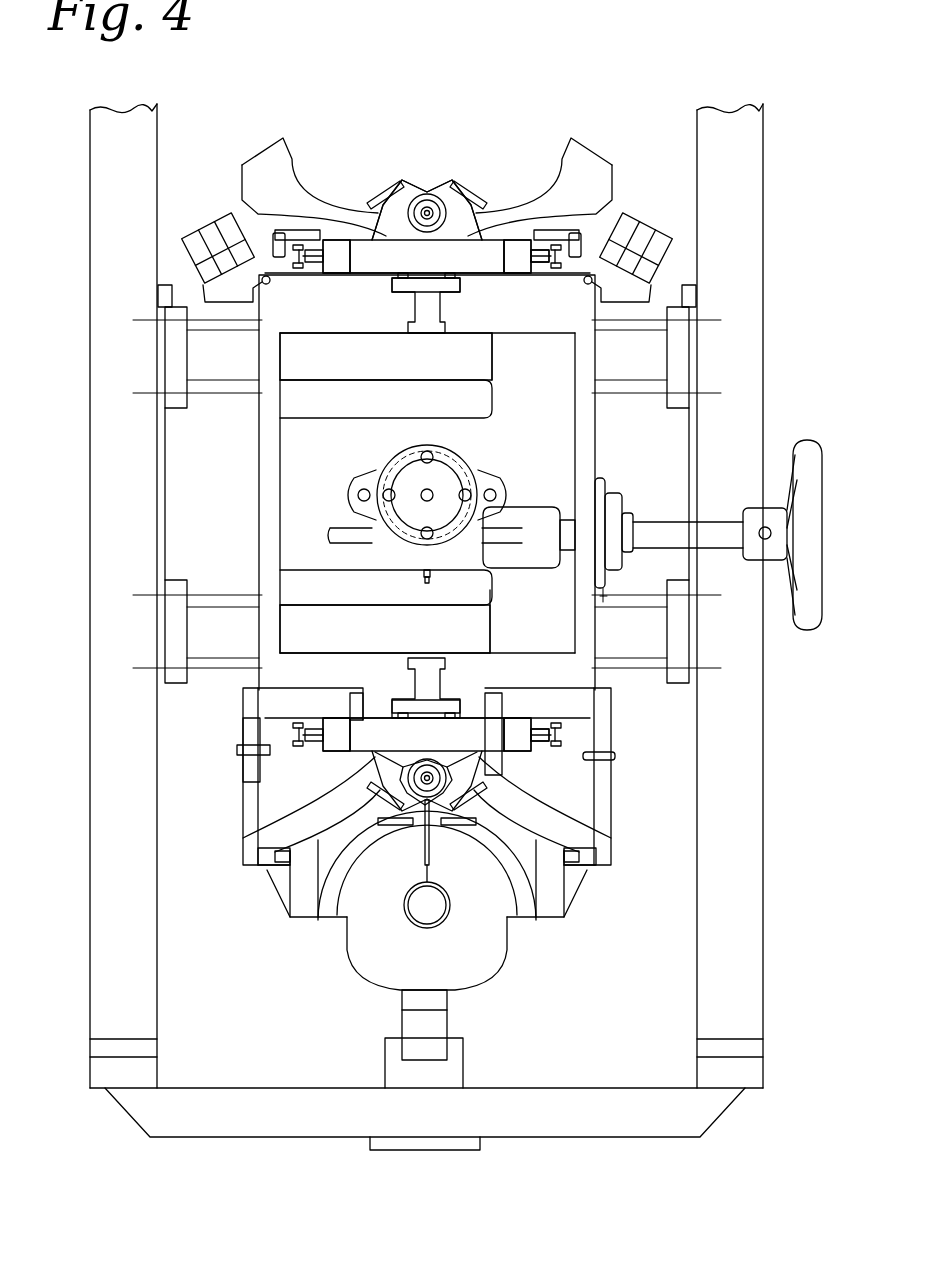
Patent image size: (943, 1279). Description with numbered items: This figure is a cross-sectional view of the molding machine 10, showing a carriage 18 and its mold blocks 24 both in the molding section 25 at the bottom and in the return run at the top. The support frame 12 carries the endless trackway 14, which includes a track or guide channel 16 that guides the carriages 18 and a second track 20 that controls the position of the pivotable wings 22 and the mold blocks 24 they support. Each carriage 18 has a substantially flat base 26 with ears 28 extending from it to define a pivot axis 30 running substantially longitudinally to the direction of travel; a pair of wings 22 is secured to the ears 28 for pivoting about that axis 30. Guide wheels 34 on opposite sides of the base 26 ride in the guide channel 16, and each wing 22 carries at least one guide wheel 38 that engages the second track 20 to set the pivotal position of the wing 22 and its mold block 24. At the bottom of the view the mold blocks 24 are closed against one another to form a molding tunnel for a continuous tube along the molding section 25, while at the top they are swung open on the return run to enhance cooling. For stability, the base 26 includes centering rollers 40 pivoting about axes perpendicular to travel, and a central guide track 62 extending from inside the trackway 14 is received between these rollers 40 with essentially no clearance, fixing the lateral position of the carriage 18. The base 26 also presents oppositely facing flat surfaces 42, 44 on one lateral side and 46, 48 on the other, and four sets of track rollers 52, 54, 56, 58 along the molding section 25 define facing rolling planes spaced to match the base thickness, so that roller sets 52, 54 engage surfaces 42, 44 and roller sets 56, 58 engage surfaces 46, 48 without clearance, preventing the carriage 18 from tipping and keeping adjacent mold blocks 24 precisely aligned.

The molding machine 10 is at (806, 126).
The support frame 12 is at (722, 186).
The endless trackway 14 is at (245, 298).
The track or guide channel 16 is at (307, 237).
The carriage 18 is at (292, 858).
The second track 20 is at (262, 287).
The wing 22 is at (276, 158).
The mold block 24 is at (382, 969).
The molding section 25 is at (575, 966).
The base 26 is at (497, 243).
The ear 28 is at (346, 240).
The pivot axis 30 is at (575, 850).
The guide wheel 34 is at (547, 345).
The guide wheel 38 is at (237, 317).
The centering roller 40 is at (398, 285).
The flat surface 42 is at (328, 243).
The flat surface 44 is at (305, 345).
The flat surface 46 is at (517, 237).
The flat surface 48 is at (517, 345).
The track roller set 52 is at (357, 767).
The track roller set 54 is at (378, 720).
The track roller set 56 is at (467, 740).
The track roller set 58 is at (510, 723).
The central guide track 62 is at (347, 345).